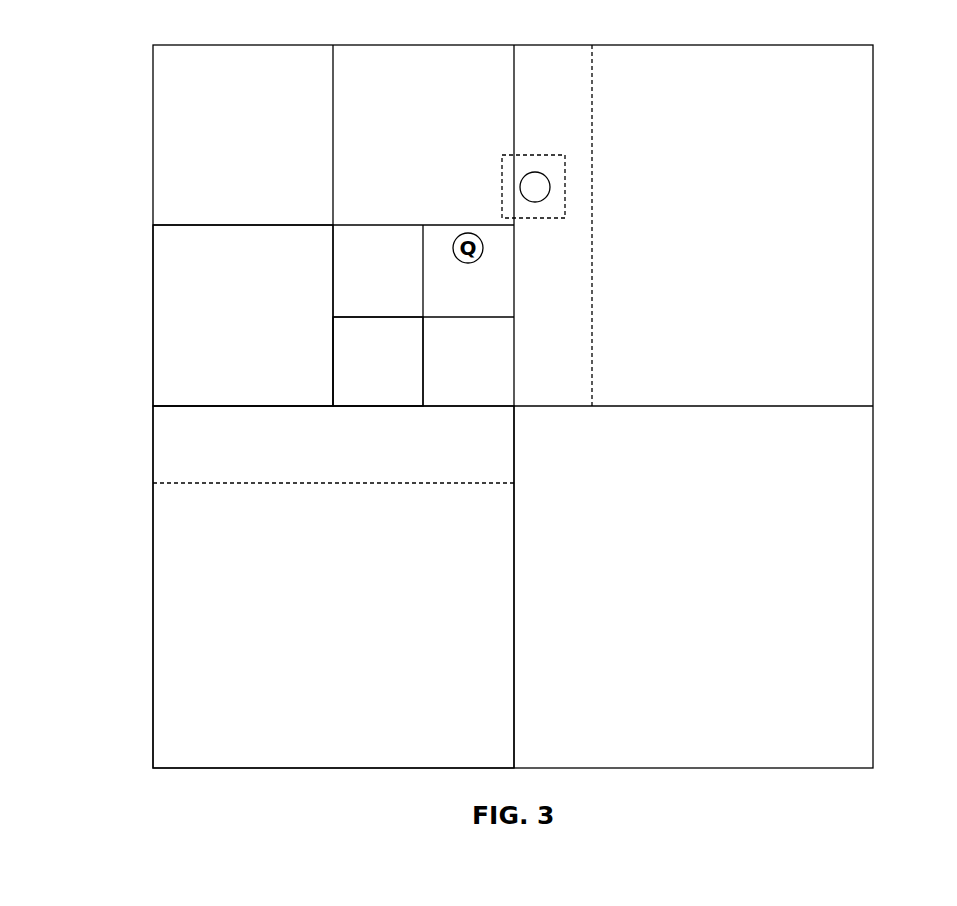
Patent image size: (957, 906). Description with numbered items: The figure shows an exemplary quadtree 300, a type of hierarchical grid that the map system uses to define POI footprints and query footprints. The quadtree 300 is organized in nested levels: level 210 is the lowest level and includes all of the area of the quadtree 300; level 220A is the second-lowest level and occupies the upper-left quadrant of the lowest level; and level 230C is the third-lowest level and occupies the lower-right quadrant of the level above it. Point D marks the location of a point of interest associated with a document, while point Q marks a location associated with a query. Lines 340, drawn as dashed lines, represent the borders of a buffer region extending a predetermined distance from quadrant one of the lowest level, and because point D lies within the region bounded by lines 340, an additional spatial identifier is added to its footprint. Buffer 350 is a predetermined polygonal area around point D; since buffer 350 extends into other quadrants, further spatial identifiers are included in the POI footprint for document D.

The quadtree 300 is at (98, 38).
The level 210 is at (153, 530).
The level 220A is at (153, 280).
The level 230C is at (333, 352).
The lines 340 is at (592, 93).
The buffer 350 is at (535, 153).